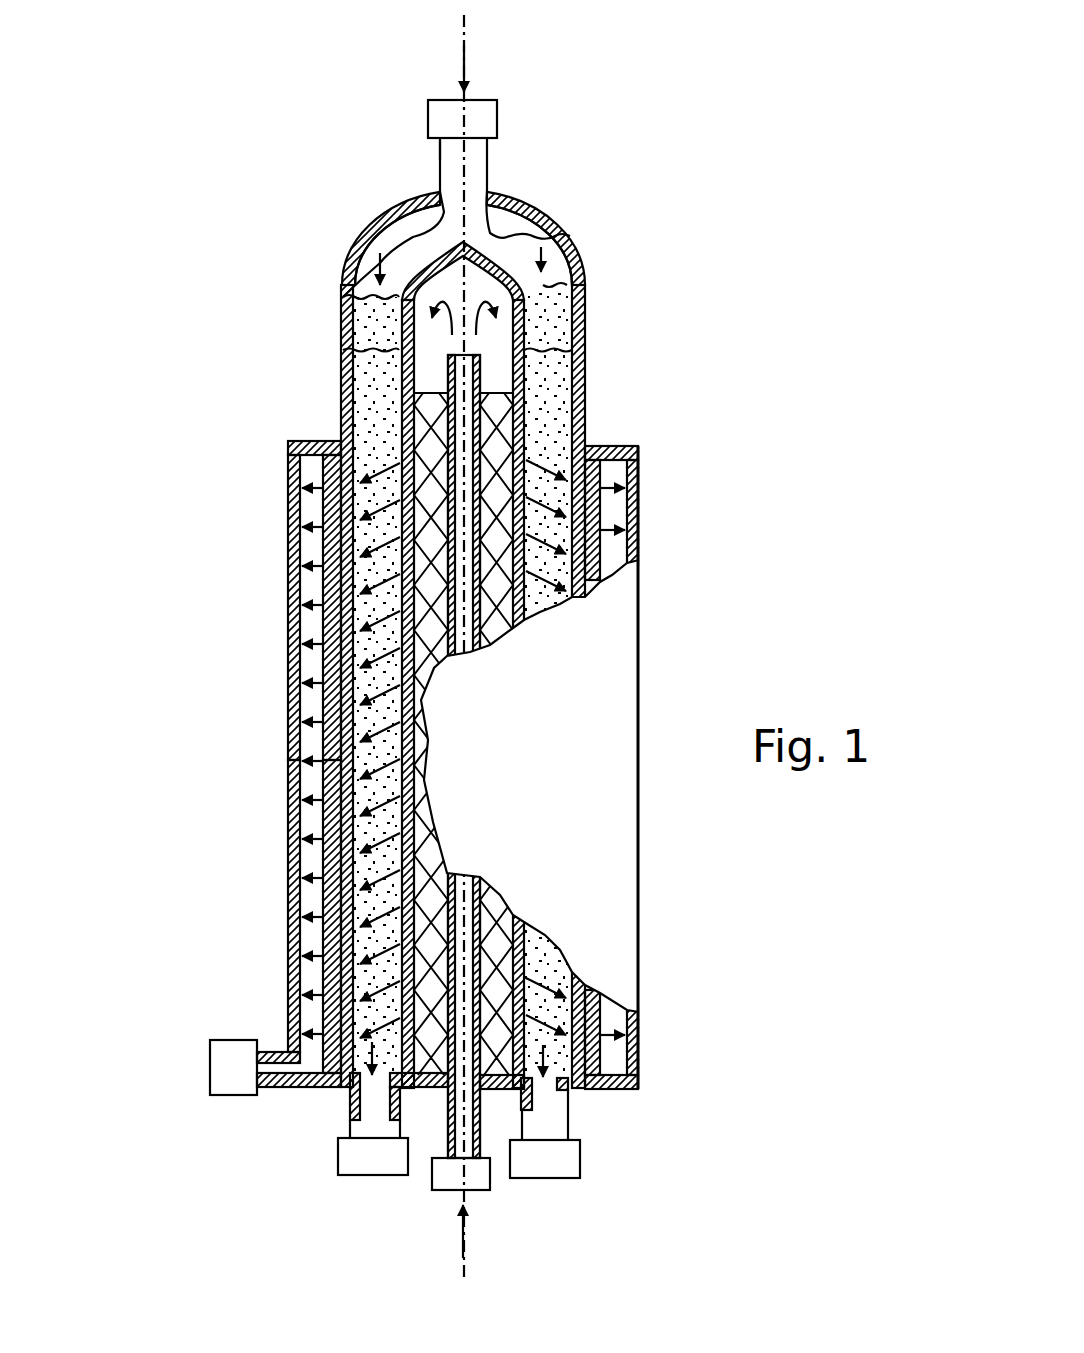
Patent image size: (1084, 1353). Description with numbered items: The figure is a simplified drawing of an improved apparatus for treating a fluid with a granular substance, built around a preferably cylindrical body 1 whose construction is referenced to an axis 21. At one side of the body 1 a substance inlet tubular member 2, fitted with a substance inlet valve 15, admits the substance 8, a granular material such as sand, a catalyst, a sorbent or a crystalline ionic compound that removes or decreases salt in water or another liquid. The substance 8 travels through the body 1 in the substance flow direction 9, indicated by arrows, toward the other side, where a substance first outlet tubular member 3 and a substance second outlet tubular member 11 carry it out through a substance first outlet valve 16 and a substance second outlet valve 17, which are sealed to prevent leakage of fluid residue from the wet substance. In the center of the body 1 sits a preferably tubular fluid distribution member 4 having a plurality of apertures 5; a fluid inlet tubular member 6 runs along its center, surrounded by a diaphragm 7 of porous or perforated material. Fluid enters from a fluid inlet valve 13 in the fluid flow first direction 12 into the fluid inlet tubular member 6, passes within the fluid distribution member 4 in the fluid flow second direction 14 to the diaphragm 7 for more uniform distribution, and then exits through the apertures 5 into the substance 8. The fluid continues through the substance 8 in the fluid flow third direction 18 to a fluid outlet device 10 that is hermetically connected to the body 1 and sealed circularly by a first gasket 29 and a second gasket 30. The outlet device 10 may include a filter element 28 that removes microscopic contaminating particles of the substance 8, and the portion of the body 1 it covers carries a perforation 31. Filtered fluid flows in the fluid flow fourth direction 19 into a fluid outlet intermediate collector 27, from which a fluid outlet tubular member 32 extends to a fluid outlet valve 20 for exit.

The body 1 is at (528, 216).
The substance inlet tubular member 2 is at (440, 172).
The substance first outlet tubular member 3 is at (527, 1115).
The fluid distribution member 4 is at (525, 345).
The apertures 5 is at (570, 935).
The fluid inlet tubular member 6 is at (478, 652).
The diaphragm 7 is at (512, 873).
The substance 8 is at (585, 300).
The substance flow direction 9 is at (470, 60).
The fluid outlet device 10 is at (273, 498).
The substance second outlet tubular member 11 is at (352, 1132).
The fluid flow first direction 12 is at (470, 1240).
The fluid inlet valve 13 is at (440, 1190).
The fluid flow second direction 14 is at (585, 268).
The substance inlet valve 15 is at (497, 118).
The substance first outlet valve 16 is at (580, 1160).
The substance second outlet valve 17 is at (372, 1176).
The fluid flow third direction 18 is at (595, 446).
The fluid flow fourth direction 19 is at (639, 500).
The fluid outlet valve 20 is at (212, 1075).
The axis 21 is at (440, 146).
The fluid outlet intermediate collector 27 is at (294, 570).
The filter element 28 is at (600, 560).
The first gasket 29 is at (288, 440).
The second gasket 30 is at (330, 1086).
The perforation 31 is at (639, 480).
The fluid outlet tubular member 32 is at (275, 1050).